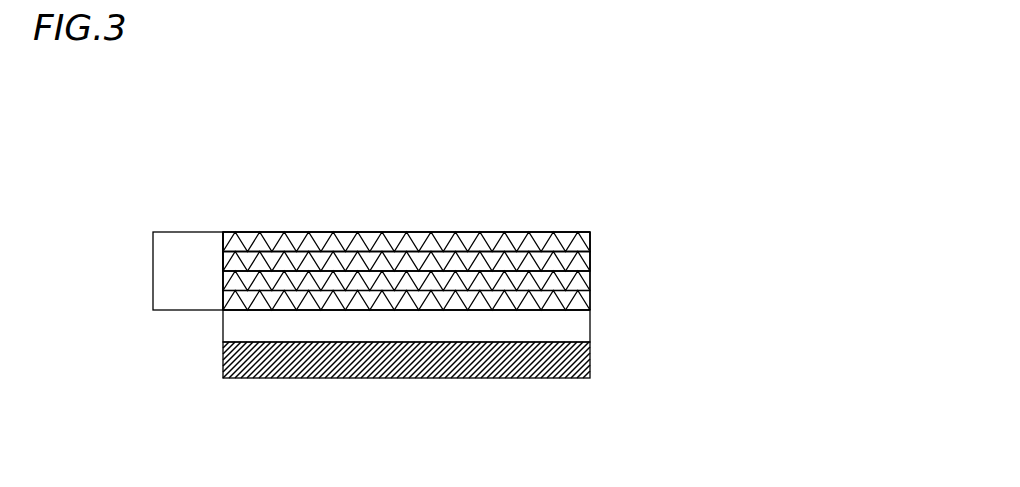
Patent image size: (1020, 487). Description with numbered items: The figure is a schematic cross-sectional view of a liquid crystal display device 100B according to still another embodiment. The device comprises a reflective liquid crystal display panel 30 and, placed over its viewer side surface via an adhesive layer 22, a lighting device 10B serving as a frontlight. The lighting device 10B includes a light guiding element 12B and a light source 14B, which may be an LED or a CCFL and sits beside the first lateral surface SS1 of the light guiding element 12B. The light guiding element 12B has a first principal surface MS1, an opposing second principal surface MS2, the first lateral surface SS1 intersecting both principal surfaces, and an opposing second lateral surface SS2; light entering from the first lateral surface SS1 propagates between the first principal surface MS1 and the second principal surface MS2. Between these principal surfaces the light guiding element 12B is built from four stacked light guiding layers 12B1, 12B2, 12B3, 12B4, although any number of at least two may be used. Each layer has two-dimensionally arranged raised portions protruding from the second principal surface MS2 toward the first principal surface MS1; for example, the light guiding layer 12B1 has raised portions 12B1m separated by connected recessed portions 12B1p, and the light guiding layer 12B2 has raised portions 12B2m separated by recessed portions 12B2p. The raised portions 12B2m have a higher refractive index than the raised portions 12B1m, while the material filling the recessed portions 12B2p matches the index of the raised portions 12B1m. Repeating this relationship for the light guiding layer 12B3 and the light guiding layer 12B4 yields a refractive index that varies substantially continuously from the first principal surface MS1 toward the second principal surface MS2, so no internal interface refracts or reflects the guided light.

The liquid crystal display device 100B is at (668, 180).
The lighting device 10B is at (775, 217).
The light guiding element 12B is at (708, 217).
The light guiding layer 12B1 is at (575, 157).
The raised portions 12B1m is at (487, 232).
The recessed portions 12B1p is at (540, 237).
The light guiding layer 12B2 is at (395, 152).
The raised portions 12B2m is at (295, 252).
The recessed portions 12B2p is at (370, 258).
The light guiding layer 12B3 is at (592, 278).
The light guiding layer 12B4 is at (592, 298).
The light source 14B is at (195, 242).
The adhesive layer 22 is at (578, 332).
The reflective liquid crystal display panel 30 is at (590, 360).
The first principal surface MS1 is at (244, 232).
The second principal surface MS2 is at (237, 313).
The first lateral surface SS1 is at (223, 260).
The second lateral surface SS2 is at (592, 234).